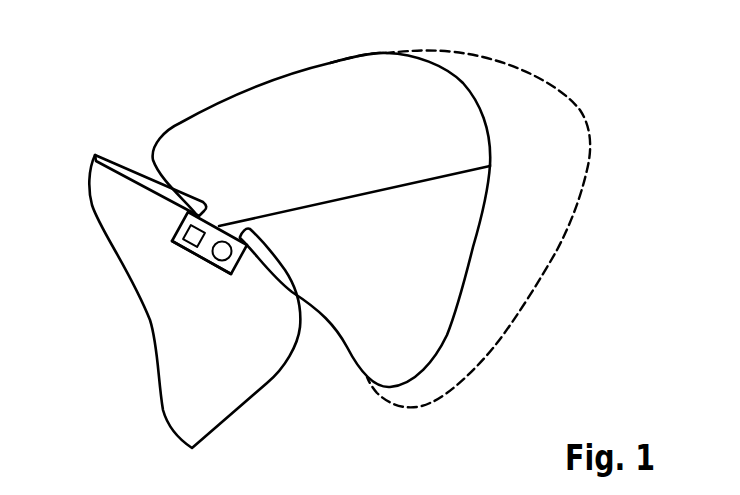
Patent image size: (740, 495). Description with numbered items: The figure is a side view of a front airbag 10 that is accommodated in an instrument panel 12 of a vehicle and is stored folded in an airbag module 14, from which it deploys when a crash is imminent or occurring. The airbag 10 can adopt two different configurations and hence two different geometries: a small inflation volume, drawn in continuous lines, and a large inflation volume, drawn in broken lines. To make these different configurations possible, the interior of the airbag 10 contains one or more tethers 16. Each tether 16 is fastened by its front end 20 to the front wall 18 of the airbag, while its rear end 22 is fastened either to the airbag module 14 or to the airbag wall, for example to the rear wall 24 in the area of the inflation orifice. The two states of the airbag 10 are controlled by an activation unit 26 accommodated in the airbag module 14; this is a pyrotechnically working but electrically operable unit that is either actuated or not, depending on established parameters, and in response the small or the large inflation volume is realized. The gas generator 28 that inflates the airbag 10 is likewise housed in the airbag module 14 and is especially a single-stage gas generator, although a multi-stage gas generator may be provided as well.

The front airbag 10 is at (551, 302).
The instrument panel 12 is at (267, 383).
The airbag module 14 is at (207, 259).
The tether 16 is at (363, 192).
The front wall 18 is at (453, 76).
The front end 20 is at (490, 167).
The rear end 22 is at (222, 226).
The rear wall 24 is at (148, 178).
The activation unit 26 is at (215, 265).
The gas generator 28 is at (178, 231).